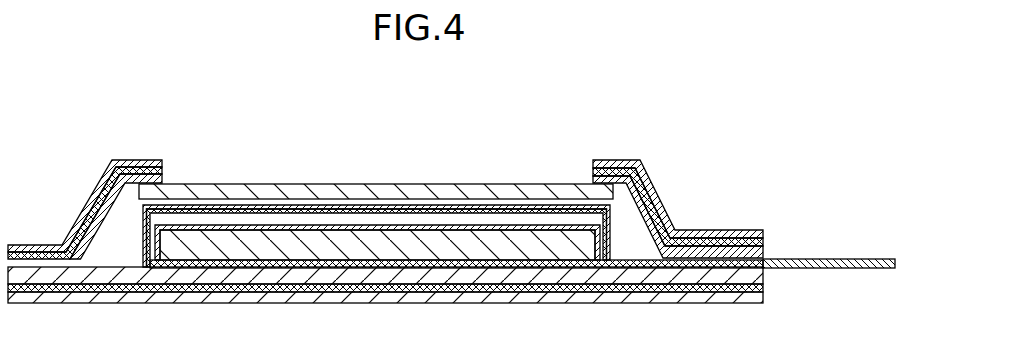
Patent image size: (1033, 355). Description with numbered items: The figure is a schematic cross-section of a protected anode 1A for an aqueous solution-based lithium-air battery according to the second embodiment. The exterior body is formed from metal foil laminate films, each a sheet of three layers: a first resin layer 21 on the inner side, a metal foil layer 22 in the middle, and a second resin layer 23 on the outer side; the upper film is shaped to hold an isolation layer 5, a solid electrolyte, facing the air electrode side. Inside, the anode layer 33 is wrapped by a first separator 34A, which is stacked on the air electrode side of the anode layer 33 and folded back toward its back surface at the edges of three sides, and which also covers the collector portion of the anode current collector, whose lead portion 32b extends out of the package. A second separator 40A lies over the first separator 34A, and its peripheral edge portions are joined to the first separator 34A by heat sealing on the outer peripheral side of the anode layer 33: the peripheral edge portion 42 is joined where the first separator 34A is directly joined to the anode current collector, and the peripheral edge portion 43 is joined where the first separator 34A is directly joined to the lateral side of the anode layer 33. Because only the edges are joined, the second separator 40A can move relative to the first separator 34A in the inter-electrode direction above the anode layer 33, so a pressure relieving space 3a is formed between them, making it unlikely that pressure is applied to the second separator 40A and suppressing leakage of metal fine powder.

The protected anode 1A is at (753, 93).
The second resin layer 23 is at (97, 178).
The metal foil layer 22 is at (140, 163).
The first resin layer 21 is at (163, 178).
The isolation layer 5 is at (365, 190).
The second separator 40A is at (407, 210).
The pressure relieving space 3a is at (253, 218).
The first separator 34A is at (282, 230).
The anode layer 33 is at (473, 242).
The anode current collector lead portion 32b is at (825, 263).
The peripheral edge portion of the second separator 42 is at (627, 235).
The peripheral edge portion of the second separator 43 is at (143, 247).